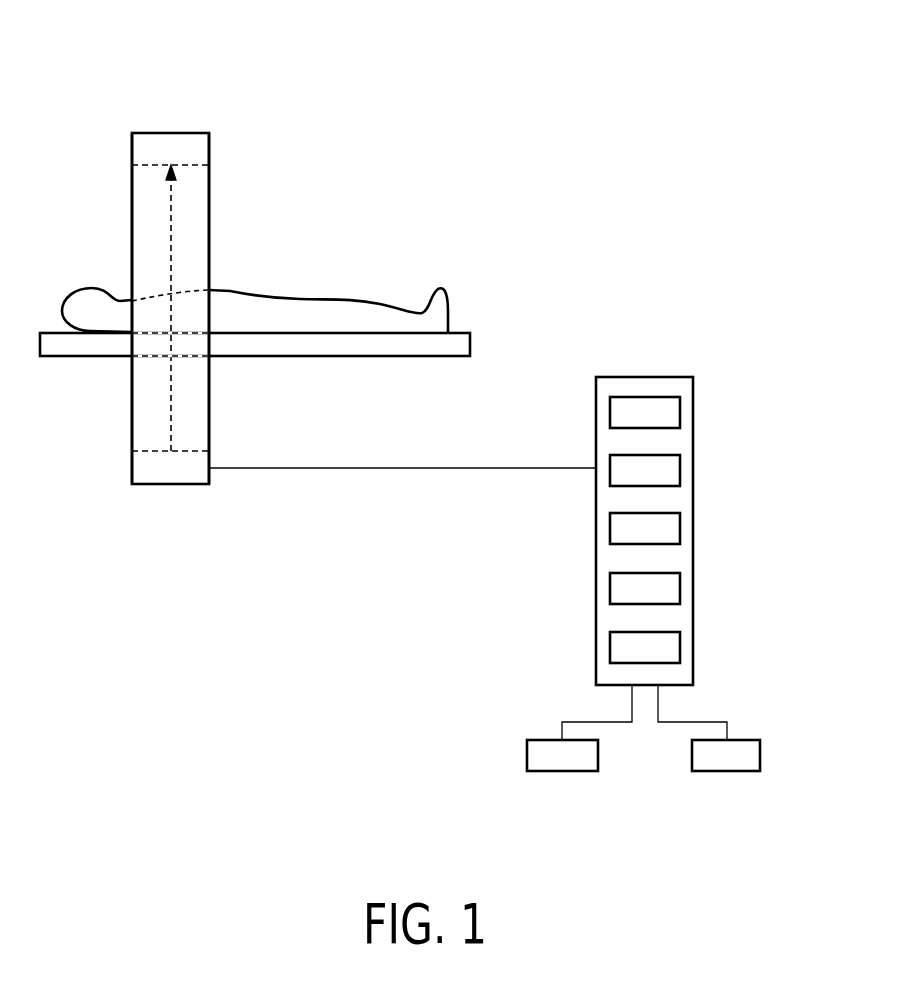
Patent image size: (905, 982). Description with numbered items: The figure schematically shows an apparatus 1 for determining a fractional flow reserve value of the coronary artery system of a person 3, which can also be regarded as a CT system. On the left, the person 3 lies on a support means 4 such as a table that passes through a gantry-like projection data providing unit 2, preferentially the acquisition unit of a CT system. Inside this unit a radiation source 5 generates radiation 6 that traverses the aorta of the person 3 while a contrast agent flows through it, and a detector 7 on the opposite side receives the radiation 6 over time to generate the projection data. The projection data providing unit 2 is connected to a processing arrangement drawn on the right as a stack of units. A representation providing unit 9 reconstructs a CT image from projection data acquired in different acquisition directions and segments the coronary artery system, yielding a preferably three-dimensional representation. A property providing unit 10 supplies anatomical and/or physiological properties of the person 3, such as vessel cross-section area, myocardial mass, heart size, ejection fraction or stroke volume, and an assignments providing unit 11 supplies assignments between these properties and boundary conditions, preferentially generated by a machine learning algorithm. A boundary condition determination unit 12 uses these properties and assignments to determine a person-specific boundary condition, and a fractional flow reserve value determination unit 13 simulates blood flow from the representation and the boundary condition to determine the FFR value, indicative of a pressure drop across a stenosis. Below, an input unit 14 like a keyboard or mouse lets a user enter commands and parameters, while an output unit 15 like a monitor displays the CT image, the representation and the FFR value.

The apparatus 1 is at (502, 75).
The projection data providing unit 2 is at (124, 528).
The person 3 is at (370, 302).
The support means 4 is at (353, 357).
The radiation source 5 is at (132, 468).
The radiation 6 is at (170, 398).
The detector 7 is at (209, 147).
The representation providing unit 9 is at (680, 409).
The property providing unit 10 is at (680, 470).
The assignments providing unit 11 is at (680, 529).
The boundary condition determination unit 12 is at (680, 588).
The fractional flow reserve value determination unit 13 is at (680, 648).
The input unit 14 is at (527, 756).
The output unit 15 is at (760, 756).